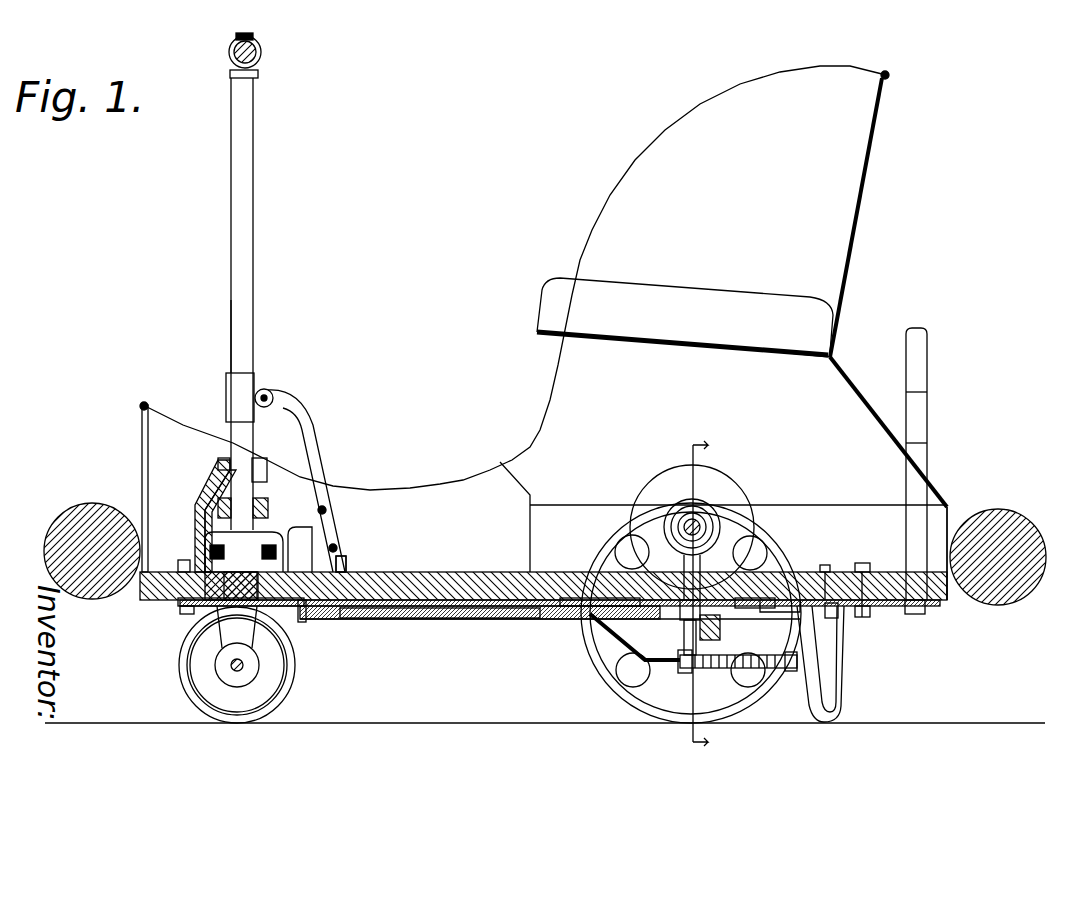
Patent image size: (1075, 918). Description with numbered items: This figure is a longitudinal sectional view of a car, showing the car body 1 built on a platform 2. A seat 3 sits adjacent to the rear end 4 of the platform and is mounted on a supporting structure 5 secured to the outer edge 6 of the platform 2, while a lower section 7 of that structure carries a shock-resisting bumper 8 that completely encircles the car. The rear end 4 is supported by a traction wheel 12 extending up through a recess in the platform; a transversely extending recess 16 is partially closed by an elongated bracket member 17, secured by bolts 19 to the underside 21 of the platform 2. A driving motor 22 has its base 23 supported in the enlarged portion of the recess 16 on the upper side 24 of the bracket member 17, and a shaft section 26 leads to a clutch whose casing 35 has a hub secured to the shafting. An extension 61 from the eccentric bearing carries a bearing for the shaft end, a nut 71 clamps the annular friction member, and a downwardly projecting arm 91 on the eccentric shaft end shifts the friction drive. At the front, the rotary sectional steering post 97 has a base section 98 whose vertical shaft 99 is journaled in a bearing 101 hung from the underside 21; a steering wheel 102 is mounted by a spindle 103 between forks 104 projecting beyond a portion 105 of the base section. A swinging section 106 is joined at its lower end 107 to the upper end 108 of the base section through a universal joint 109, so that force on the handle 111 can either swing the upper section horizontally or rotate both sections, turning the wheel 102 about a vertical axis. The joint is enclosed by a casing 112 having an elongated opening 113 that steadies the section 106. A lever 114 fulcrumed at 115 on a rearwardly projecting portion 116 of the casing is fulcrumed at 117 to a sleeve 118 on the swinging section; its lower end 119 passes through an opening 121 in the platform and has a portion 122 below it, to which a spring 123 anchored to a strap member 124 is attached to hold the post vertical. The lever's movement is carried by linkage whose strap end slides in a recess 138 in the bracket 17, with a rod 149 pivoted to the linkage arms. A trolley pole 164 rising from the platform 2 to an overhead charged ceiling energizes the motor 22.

The car body 1 is at (545, 319).
The platform 2 is at (480, 578).
The seat 3 is at (708, 298).
The rear end 4 is at (834, 575).
The supporting structure 5 is at (842, 380).
The outer edge 6 is at (968, 614).
The lower section 7 is at (947, 506).
The bumper 8 is at (1030, 527).
The traction wheel 12 is at (750, 712).
The transversely extending recess 16 is at (782, 590).
The bracket member 17 is at (720, 632).
The bolts 19 is at (798, 615).
The underside 21 is at (580, 578).
The driving motor 22 is at (735, 483).
The base 23 is at (712, 580).
The upper side 24 is at (720, 580).
The shaft section 26 is at (700, 527).
The casing 35 is at (698, 500).
The extension 61 is at (665, 556).
The nut 71 is at (578, 722).
The arm 91 is at (680, 638).
The steering post 97 is at (241, 212).
The base section 98 is at (173, 600).
The vertical shaft 99 is at (183, 604).
The bearing 101 is at (190, 562).
The steering wheel 102 is at (280, 690).
The spindle 103 is at (236, 672).
The forks 104 is at (233, 648).
The portion 105 is at (215, 607).
The swinging section 106 is at (236, 327).
The lower end 107 is at (240, 477).
The upper end 108 is at (250, 533).
The universal joint 109 is at (222, 518).
The handle 111 is at (262, 54).
The casing 112 is at (203, 520).
The opening 113 is at (240, 460).
The lever 114 is at (310, 448).
The fulcrum 115 is at (327, 512).
The rearwardly projecting portion 116 is at (300, 503).
The fulcrum 117 is at (268, 392).
The sleeve 118 is at (243, 378).
The lower end 119 is at (345, 572).
The opening 121 is at (341, 564).
The portion 122 is at (303, 614).
The spring 123 is at (370, 614).
The strap member 124 is at (420, 616).
The recess 138 is at (628, 622).
The rod 149 is at (675, 668).
The trolley pole 164 is at (929, 406).